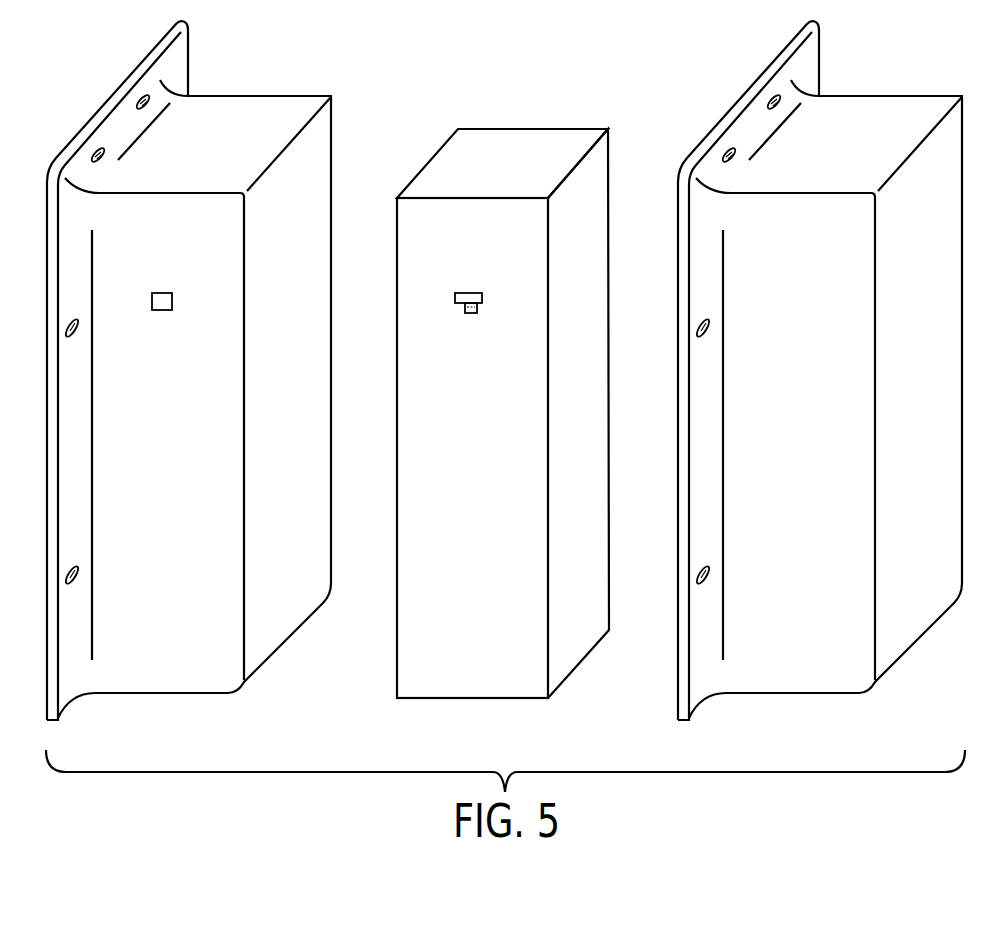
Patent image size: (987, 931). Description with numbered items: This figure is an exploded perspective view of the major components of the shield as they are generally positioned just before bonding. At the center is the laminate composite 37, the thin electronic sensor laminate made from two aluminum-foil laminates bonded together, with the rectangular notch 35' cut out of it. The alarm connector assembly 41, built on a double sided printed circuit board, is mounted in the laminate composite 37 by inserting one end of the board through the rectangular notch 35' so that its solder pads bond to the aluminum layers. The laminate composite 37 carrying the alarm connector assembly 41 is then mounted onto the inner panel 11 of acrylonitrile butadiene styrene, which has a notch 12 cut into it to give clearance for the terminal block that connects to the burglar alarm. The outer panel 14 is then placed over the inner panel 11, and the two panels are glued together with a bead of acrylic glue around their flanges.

The inner panel 11 is at (237, 110).
The notch 12 is at (160, 303).
The outer panel 14 is at (868, 110).
The laminate composite 37 is at (490, 145).
The rectangular notch 35' is at (489, 271).
The alarm connector assembly 41 is at (470, 314).